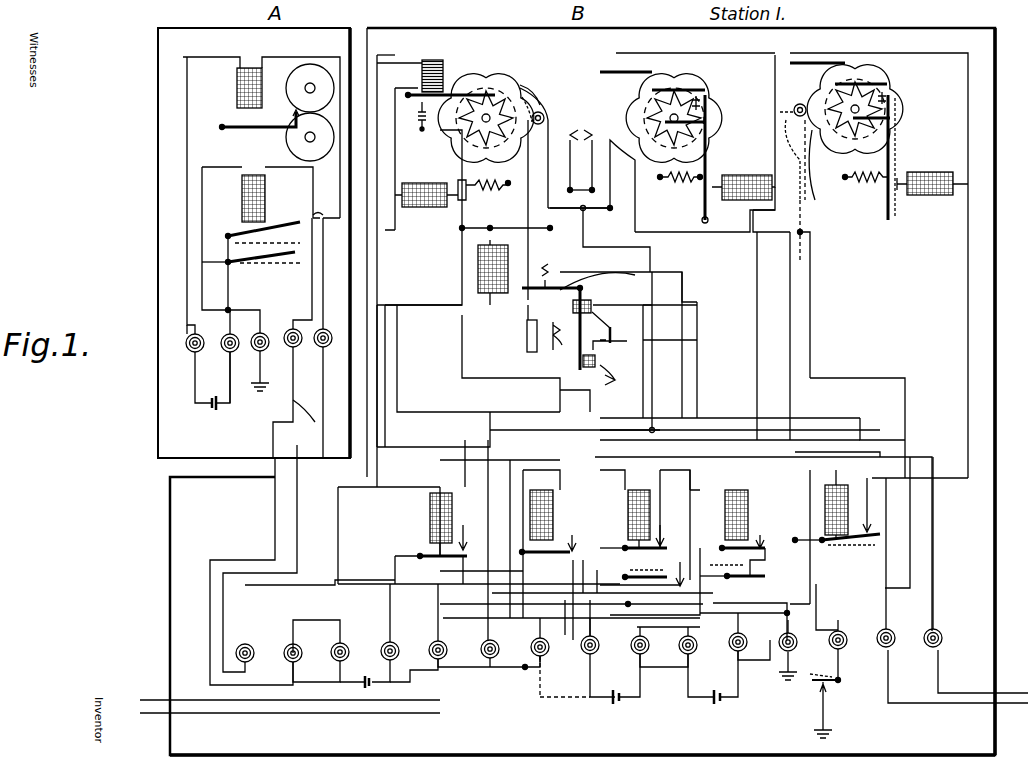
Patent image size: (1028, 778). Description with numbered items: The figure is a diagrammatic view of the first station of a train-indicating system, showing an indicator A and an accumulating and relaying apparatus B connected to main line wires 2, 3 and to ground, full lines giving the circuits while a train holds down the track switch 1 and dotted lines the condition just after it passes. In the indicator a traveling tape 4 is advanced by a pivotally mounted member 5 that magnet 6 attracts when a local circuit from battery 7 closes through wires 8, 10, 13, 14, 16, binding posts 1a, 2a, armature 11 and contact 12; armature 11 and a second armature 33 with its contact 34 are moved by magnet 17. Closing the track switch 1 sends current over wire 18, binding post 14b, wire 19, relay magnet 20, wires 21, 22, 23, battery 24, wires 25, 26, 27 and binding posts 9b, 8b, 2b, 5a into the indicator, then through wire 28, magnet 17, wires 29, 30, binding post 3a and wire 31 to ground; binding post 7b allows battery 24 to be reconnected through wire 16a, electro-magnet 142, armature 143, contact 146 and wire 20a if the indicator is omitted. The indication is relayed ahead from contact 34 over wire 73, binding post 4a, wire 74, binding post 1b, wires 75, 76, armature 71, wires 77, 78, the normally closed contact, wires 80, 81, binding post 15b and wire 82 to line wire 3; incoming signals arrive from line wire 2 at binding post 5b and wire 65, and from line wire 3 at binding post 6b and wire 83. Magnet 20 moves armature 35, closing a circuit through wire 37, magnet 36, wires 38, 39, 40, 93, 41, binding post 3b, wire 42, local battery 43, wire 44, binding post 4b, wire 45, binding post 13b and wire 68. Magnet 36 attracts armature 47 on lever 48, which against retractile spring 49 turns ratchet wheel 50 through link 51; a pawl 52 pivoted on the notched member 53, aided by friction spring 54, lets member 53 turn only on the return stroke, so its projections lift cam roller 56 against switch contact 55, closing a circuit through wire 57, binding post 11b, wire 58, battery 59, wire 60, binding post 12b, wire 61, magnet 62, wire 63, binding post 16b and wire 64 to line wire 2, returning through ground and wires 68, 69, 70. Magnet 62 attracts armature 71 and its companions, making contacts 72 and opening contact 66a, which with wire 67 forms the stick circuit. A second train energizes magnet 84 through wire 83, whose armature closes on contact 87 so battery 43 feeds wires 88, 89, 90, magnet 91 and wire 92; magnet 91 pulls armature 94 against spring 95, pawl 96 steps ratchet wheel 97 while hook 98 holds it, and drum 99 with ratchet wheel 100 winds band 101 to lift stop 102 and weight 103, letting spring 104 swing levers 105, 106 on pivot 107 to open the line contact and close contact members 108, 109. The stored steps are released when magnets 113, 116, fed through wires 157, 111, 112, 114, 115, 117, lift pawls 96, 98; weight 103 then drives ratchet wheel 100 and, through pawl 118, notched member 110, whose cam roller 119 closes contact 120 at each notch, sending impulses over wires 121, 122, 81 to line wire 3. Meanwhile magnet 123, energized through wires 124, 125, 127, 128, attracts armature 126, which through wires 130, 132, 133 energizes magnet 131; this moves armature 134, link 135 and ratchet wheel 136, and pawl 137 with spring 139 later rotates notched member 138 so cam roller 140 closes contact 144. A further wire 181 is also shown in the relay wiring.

The track switch 1 is at (840, 682).
The main line wire 2 is at (368, 704).
The main line wire 3 is at (285, 713).
The traveling tape 4 is at (298, 105).
The pivotally mounted member 5 is at (268, 130).
The magnet 6 is at (237, 92).
The battery 7 is at (208, 408).
The wire 8 is at (232, 380).
The wire 10 is at (212, 293).
The armature 11 is at (250, 242).
The contact 12 is at (285, 226).
The wire 13 is at (340, 172).
The wire 14 is at (187, 110).
The wire 16 is at (195, 382).
The magnet 17 is at (268, 195).
The wire 18 is at (840, 664).
The wire 19 is at (812, 598).
The magnet 20 is at (852, 500).
The wire 21 is at (838, 452).
The wire 22 is at (620, 642).
The wire 23 is at (643, 672).
The battery 24 is at (616, 706).
The wire 25 is at (588, 690).
The wire 26 is at (570, 628).
The wire 27 is at (323, 380).
The wire 28 is at (324, 285).
The wire 29 is at (204, 206).
The wire 30 is at (230, 298).
The wire 31 is at (264, 370).
The armature 33 is at (275, 262).
The contact 34 is at (297, 248).
The armature 35 is at (852, 550).
The magnet 36 is at (930, 172).
The wire 37 is at (958, 478).
The wire 38 is at (968, 104).
The wire 39 is at (616, 53).
The wire 40 is at (377, 275).
The wire 41 is at (340, 530).
The wire 42 is at (340, 674).
The battery 43 is at (364, 679).
The wire 44 is at (392, 682).
The wire 45 is at (468, 670).
The armature 47 is at (898, 192).
The lever 48 is at (880, 210).
The retractile spring 49 is at (870, 186).
The ratchet wheel 50 is at (830, 98).
The link 51 is at (896, 108).
The pawl 52 is at (855, 80).
The notched member 53 is at (900, 90).
The friction spring 54 is at (552, 100).
The switch contact 55 is at (822, 150).
The cam roller 56 is at (794, 110).
The wire 57 is at (810, 300).
The wire 58 is at (688, 694).
The battery 59 is at (716, 706).
The wire 60 is at (740, 692).
The wire 61 is at (750, 618).
The magnet 62 is at (628, 514).
The wire 63 is at (645, 470).
The wire 64 is at (940, 666).
The wire 65 is at (445, 605).
The contact 66a is at (670, 604).
The wire 67 is at (760, 603).
The wire 68 is at (766, 542).
The wire 69 is at (790, 395).
The wire 70 is at (790, 230).
The armature 71 is at (640, 552).
The contacts 72 is at (660, 550).
The wire 73 is at (312, 300).
The wire 74 is at (332, 446).
The wire 75 is at (303, 606).
The wire 76 is at (572, 535).
The wire 77 is at (672, 516).
The wire 78 is at (682, 373).
The wire 80 is at (590, 398).
The wire 81 is at (870, 432).
The wire 82 is at (888, 692).
The wire 83 is at (450, 470).
The magnet 84 is at (430, 518).
The contact 87 is at (466, 545).
The wire 88 is at (395, 565).
The wire 89 is at (418, 556).
The wire 90 is at (462, 368).
The magnet 91 is at (478, 255).
The wire 92 is at (470, 300).
The wire 93 is at (385, 352).
The armature 94 is at (484, 226).
The retractile spring 95 is at (496, 186).
The pawl 96 is at (458, 188).
The ratchet wheel 97 is at (545, 116).
The pawl 98 is at (485, 95).
The drum 99 is at (500, 100).
The ratchet wheel 100 is at (445, 146).
The tape or band 101 is at (530, 265).
The stop 102 is at (535, 286).
The weight 103 is at (527, 342).
The retractile spring 104 is at (560, 285).
The lever 105 is at (586, 288).
The lever 106 is at (592, 308).
The pivotal support 107 is at (625, 276).
The contact member 108 is at (612, 330).
The contact member 109 is at (615, 370).
The notched member 110 is at (528, 88).
The wire 111 is at (490, 428).
The wire 112 is at (405, 405).
The magnet 113 is at (432, 207).
The wire 114 is at (418, 118).
The wire 115 is at (418, 86).
The magnet 116 is at (432, 58).
The wire 117 is at (377, 55).
The pawl 118 is at (535, 100).
The cam roller 119 is at (575, 125).
The contact 120 is at (592, 134).
The wire 121 is at (708, 240).
The wire 122 is at (590, 222).
The magnet 123 is at (748, 504).
The wire 124 is at (722, 418).
The wire 125 is at (518, 380).
The armature 126 is at (752, 580).
The wire 127 is at (698, 498).
The wire 128 is at (696, 332).
The wire 130 is at (775, 138).
The magnet 131 is at (748, 175).
The wire 132 is at (757, 278).
The wire 133 is at (732, 568).
The armature 134 is at (705, 195).
The link 135 is at (708, 104).
The ratchet wheel 136 is at (645, 110).
The pawl 137 is at (680, 85).
The notched member 138 is at (708, 84).
The retractile spring 139 is at (690, 186).
The cam roller 140 is at (596, 138).
The electro-magnet 142 is at (553, 510).
The armature 143 is at (528, 548).
The contact 144 is at (612, 168).
The contact 146 is at (552, 556).
The wire 157 is at (566, 648).
The wire 181 is at (662, 336).
The binding post 1a is at (198, 352).
The binding post 2a is at (236, 352).
The binding post 3a is at (266, 338).
The binding post 4a is at (296, 333).
The binding post 5a is at (328, 333).
The wire 16a is at (528, 472).
The wire 20a is at (490, 572).
The binding post 1b is at (253, 648).
The binding post 2b is at (301, 648).
The binding post 3b is at (347, 648).
The binding post 4b is at (397, 646).
The binding post 5b is at (445, 646).
The binding post 6b is at (497, 644).
The binding post 7b is at (547, 642).
The binding post 8b is at (599, 642).
The binding post 9b is at (649, 642).
The binding post 11b is at (695, 640).
The binding post 12b is at (747, 638).
The binding post 13b is at (797, 638).
The binding post 14b is at (847, 636).
The binding post 15b is at (895, 636).
The binding post 16b is at (943, 636).